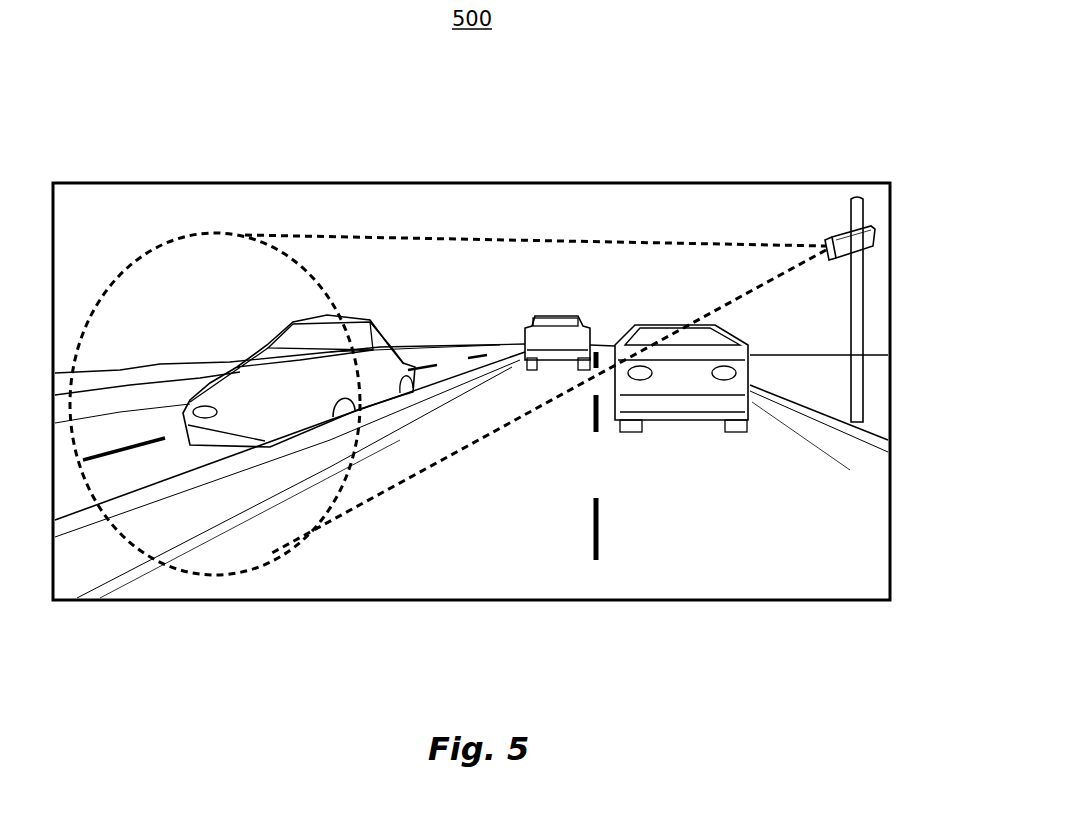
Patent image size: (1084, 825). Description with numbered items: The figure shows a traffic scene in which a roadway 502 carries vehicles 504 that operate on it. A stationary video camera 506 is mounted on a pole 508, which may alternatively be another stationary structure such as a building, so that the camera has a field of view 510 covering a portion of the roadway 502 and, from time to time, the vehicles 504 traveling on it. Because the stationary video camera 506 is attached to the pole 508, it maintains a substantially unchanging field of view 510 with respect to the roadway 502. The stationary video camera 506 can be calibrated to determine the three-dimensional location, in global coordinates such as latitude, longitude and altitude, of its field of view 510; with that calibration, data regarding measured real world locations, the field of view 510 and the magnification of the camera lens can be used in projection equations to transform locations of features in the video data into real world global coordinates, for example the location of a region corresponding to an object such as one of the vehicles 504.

The roadway 502 is at (449, 558).
The vehicles 504 is at (542, 216).
The stationary video camera 506 is at (875, 234).
The pole 508 is at (864, 303).
The field of view 510 is at (137, 552).